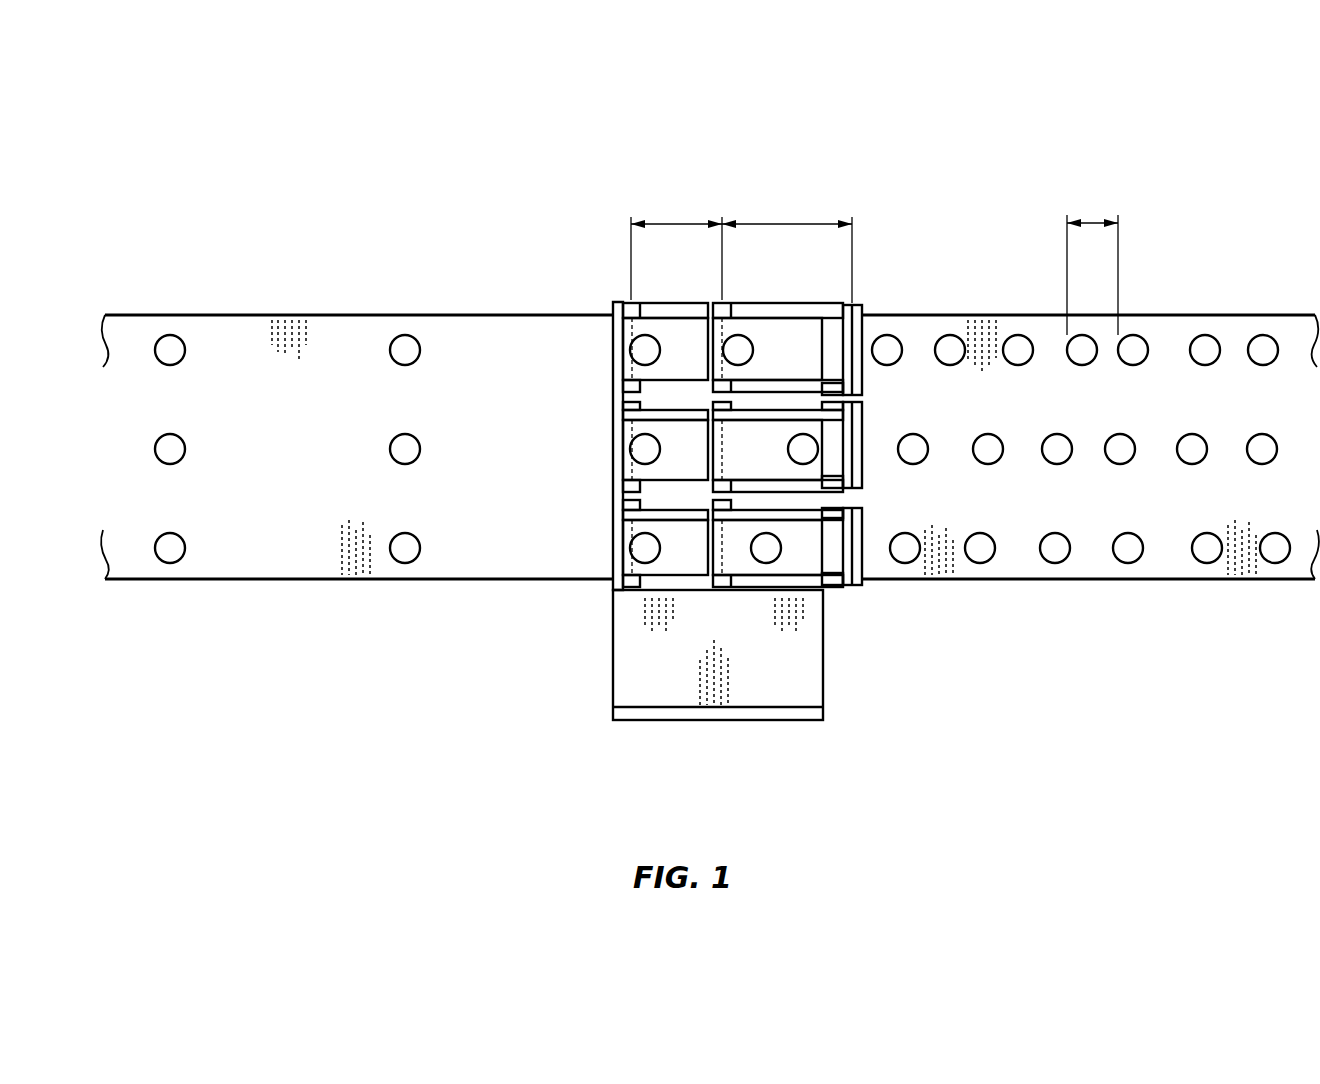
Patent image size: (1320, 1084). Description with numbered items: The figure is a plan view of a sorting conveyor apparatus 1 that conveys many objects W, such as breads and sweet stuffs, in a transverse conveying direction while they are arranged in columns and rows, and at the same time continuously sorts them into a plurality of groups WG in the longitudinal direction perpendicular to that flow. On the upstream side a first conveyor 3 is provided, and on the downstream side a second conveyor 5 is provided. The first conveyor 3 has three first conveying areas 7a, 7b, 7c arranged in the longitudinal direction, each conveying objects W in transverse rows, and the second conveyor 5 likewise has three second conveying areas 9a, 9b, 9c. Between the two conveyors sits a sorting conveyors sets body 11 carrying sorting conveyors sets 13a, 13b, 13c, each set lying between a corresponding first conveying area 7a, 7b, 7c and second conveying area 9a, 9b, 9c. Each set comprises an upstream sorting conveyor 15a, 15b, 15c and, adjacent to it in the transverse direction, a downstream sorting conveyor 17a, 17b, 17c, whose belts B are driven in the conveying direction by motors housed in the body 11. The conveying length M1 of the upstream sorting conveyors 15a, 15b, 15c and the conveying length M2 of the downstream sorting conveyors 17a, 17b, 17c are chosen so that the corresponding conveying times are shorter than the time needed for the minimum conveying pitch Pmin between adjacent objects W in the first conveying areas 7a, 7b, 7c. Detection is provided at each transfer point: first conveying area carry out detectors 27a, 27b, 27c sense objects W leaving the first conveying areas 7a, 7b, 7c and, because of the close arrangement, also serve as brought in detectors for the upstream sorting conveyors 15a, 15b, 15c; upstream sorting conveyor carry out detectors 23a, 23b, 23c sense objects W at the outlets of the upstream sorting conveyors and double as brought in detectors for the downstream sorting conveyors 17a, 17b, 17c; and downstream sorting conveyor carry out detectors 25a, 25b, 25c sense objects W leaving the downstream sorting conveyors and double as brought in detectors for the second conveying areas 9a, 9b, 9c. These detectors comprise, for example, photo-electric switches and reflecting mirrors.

The sorting conveyor apparatus 1 is at (756, 415).
The first conveyor 3 is at (1090, 344).
The second conveyor 5 is at (357, 346).
The first conveying area 7a is at (1233, 330).
The first conveying area 7b is at (1215, 432).
The first conveying area 7c is at (1210, 520).
The second conveying area 9a is at (325, 343).
The second conveying area 9b is at (365, 445).
The second conveying area 9c is at (372, 545).
The sorting conveyors sets body 11 is at (823, 660).
The sorting conveyors set 13a is at (607, 340).
The sorting conveyors set 13b is at (608, 430).
The sorting conveyors set 13c is at (608, 563).
The upstream sorting conveyor 15a is at (815, 369).
The upstream sorting conveyor 15b is at (773, 467).
The upstream sorting conveyor 15c is at (823, 565).
The downstream sorting conveyor 17a is at (688, 357).
The downstream sorting conveyor 17b is at (687, 465).
The downstream sorting conveyor 17c is at (678, 532).
The upstream sorting conveyor carry out detector 23a is at (727, 300).
The upstream sorting conveyor carry out detector 23b is at (731, 405).
The upstream sorting conveyor carry out detector 23c is at (731, 503).
The downstream sorting conveyor carry out detector 25a is at (627, 302).
The downstream sorting conveyor carry out detector 25b is at (625, 405).
The downstream sorting conveyor carry out detector 25c is at (625, 503).
The first conveying area carry out detector 27a is at (908, 286).
The first conveying area carry out detector 27b is at (860, 407).
The first conveying area carry out detector 27c is at (860, 507).
The belt B is at (670, 335).
The object to be conveyed W is at (168, 364).
The group WG is at (187, 337).
The conveying length of upstream sorting conveyor M1 is at (718, 172).
The conveying length of downstream sorting conveyor M2 is at (676, 243).
The minimum conveying pitch Pmin is at (1090, 172).